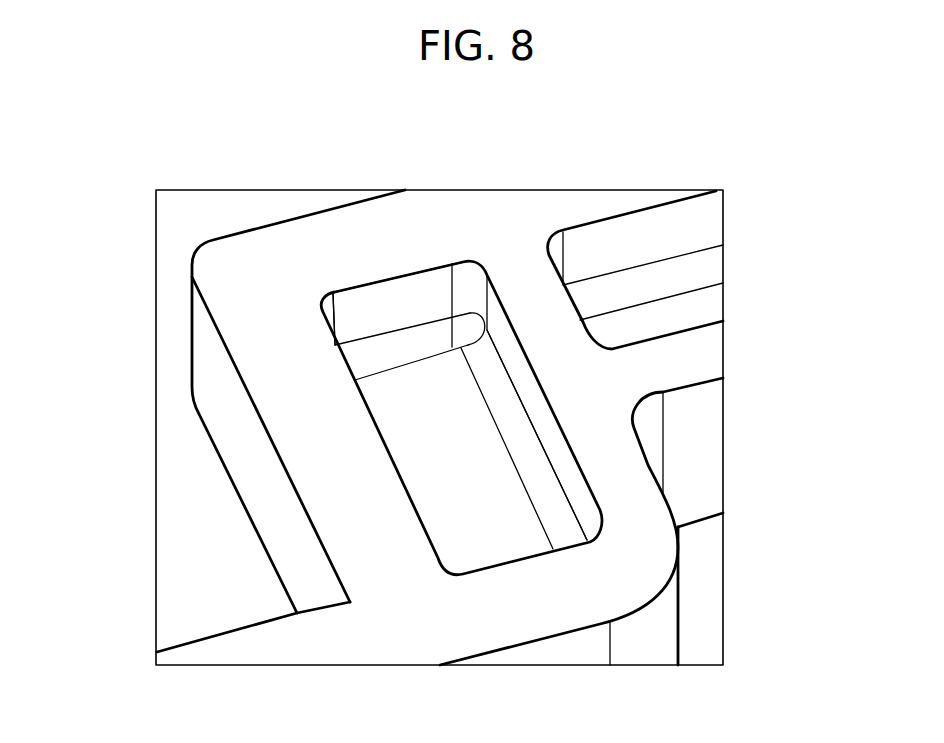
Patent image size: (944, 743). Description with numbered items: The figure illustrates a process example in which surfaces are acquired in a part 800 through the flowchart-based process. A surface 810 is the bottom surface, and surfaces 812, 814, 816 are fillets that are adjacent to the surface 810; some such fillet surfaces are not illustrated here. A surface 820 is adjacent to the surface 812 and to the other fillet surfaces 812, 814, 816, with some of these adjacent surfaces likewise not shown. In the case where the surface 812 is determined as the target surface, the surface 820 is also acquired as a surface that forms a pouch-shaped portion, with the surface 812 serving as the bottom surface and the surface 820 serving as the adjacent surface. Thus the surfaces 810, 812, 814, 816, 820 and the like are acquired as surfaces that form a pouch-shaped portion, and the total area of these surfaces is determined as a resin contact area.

The part 800 is at (703, 358).
The surface 810 is at (413, 445).
The surface 812 is at (412, 343).
The surface 814 is at (467, 327).
The surface 816 is at (548, 506).
The surface 820 is at (365, 313).